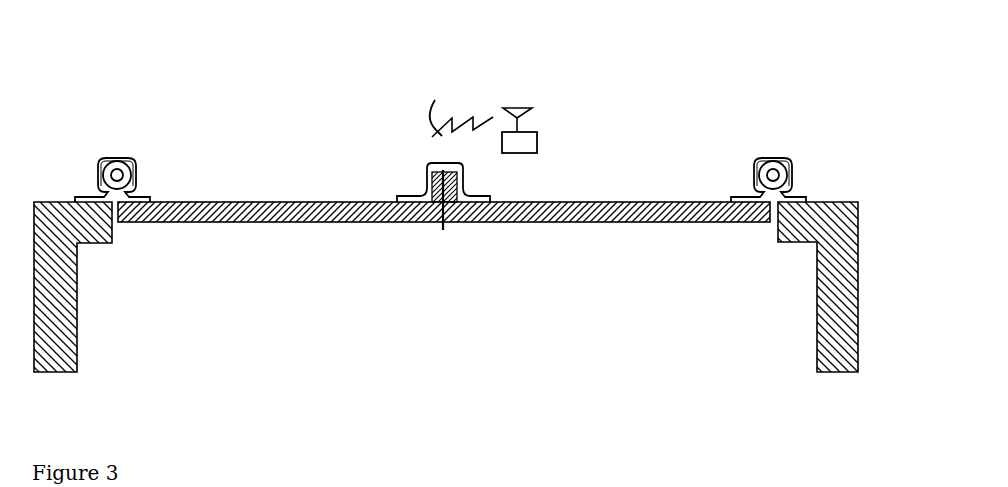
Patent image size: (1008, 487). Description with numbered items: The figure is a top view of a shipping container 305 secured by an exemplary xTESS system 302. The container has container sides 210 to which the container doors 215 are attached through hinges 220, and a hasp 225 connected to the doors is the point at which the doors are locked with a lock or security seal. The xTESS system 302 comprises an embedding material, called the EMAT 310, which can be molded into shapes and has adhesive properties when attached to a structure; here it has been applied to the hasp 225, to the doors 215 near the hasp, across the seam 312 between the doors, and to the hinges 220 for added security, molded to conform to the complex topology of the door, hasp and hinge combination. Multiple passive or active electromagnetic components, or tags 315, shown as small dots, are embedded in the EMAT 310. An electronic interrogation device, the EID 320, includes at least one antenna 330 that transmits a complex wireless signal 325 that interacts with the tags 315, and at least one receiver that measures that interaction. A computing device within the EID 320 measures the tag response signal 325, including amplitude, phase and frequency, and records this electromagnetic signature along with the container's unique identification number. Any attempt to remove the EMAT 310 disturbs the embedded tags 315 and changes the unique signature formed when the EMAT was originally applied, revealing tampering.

The container side 210 is at (82, 270).
The container door 215 is at (323, 227).
The hinge 220 is at (830, 118).
The hasp 225 is at (443, 222).
The xTESS system 302 is at (778, 150).
The shipping container 305 is at (507, 392).
The embedding material (EMAT) 310 is at (140, 172).
The seam 312 is at (443, 227).
The tags 315 is at (413, 190).
The electronic interrogation device (EID) 320 is at (566, 138).
The wireless signal 325 is at (461, 112).
The antenna 330 is at (528, 111).